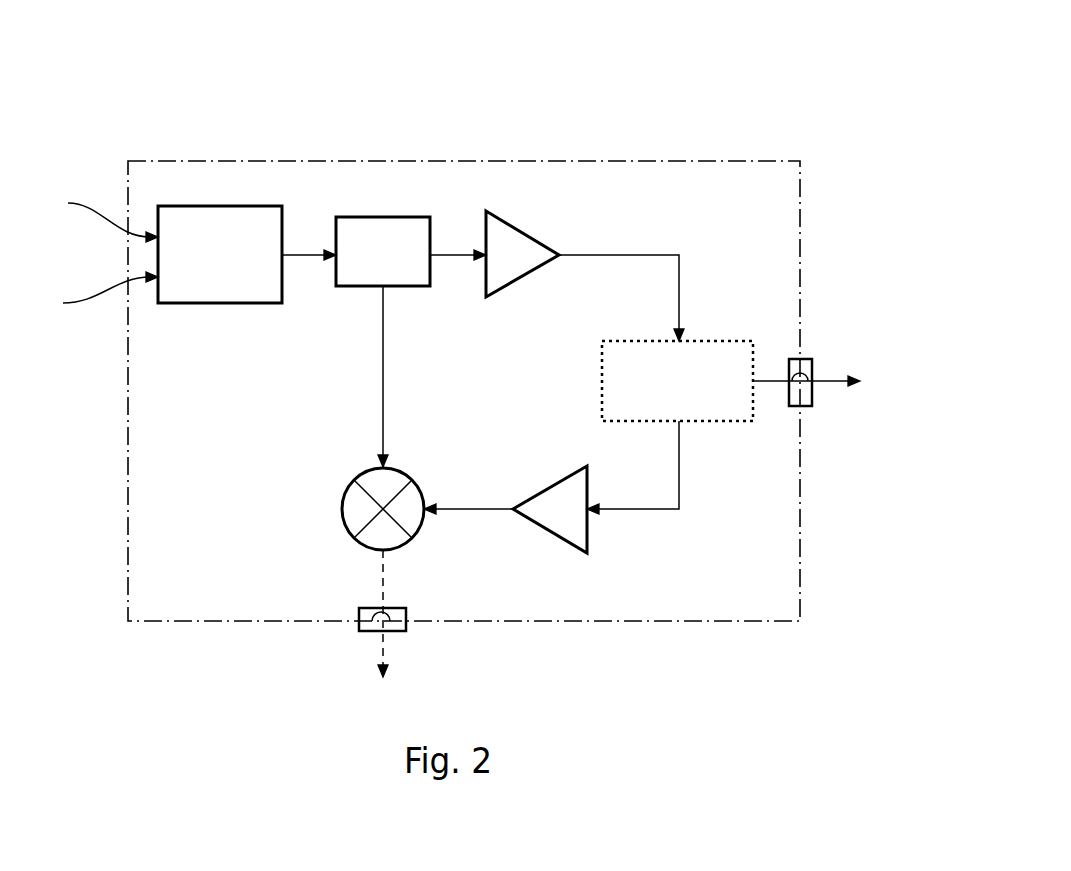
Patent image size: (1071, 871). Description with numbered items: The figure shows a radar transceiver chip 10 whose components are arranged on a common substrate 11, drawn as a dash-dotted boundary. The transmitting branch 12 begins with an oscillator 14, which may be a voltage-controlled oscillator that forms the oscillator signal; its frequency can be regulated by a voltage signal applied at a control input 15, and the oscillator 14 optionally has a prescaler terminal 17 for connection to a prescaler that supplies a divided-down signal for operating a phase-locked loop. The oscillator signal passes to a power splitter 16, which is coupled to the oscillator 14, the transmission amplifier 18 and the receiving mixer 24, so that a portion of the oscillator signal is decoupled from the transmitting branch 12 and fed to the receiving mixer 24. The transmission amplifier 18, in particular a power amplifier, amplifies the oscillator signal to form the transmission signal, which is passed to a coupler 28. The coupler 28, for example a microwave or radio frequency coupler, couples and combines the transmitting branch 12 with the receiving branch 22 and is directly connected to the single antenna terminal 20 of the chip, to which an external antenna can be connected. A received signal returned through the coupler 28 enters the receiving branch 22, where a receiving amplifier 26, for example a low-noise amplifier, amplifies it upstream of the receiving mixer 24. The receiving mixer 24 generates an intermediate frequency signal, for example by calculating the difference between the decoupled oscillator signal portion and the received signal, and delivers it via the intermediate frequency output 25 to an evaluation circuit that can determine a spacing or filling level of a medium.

The radar transceiver chip 10 is at (750, 108).
The substrate 11 is at (621, 157).
The transmitting branch 12 is at (635, 227).
The oscillator 14 is at (216, 206).
The control input 15 is at (96, 219).
The power splitter 16 is at (372, 217).
The prescaler terminal 17 is at (96, 291).
The transmission amplifier 18 is at (502, 218).
The antenna terminal 20 is at (813, 370).
The receiving branch 22 is at (652, 532).
The receiving mixer 24 is at (410, 537).
The intermediate frequency output 25 is at (370, 630).
The receiving amplifier 26 is at (588, 535).
The coupler 28 is at (738, 341).